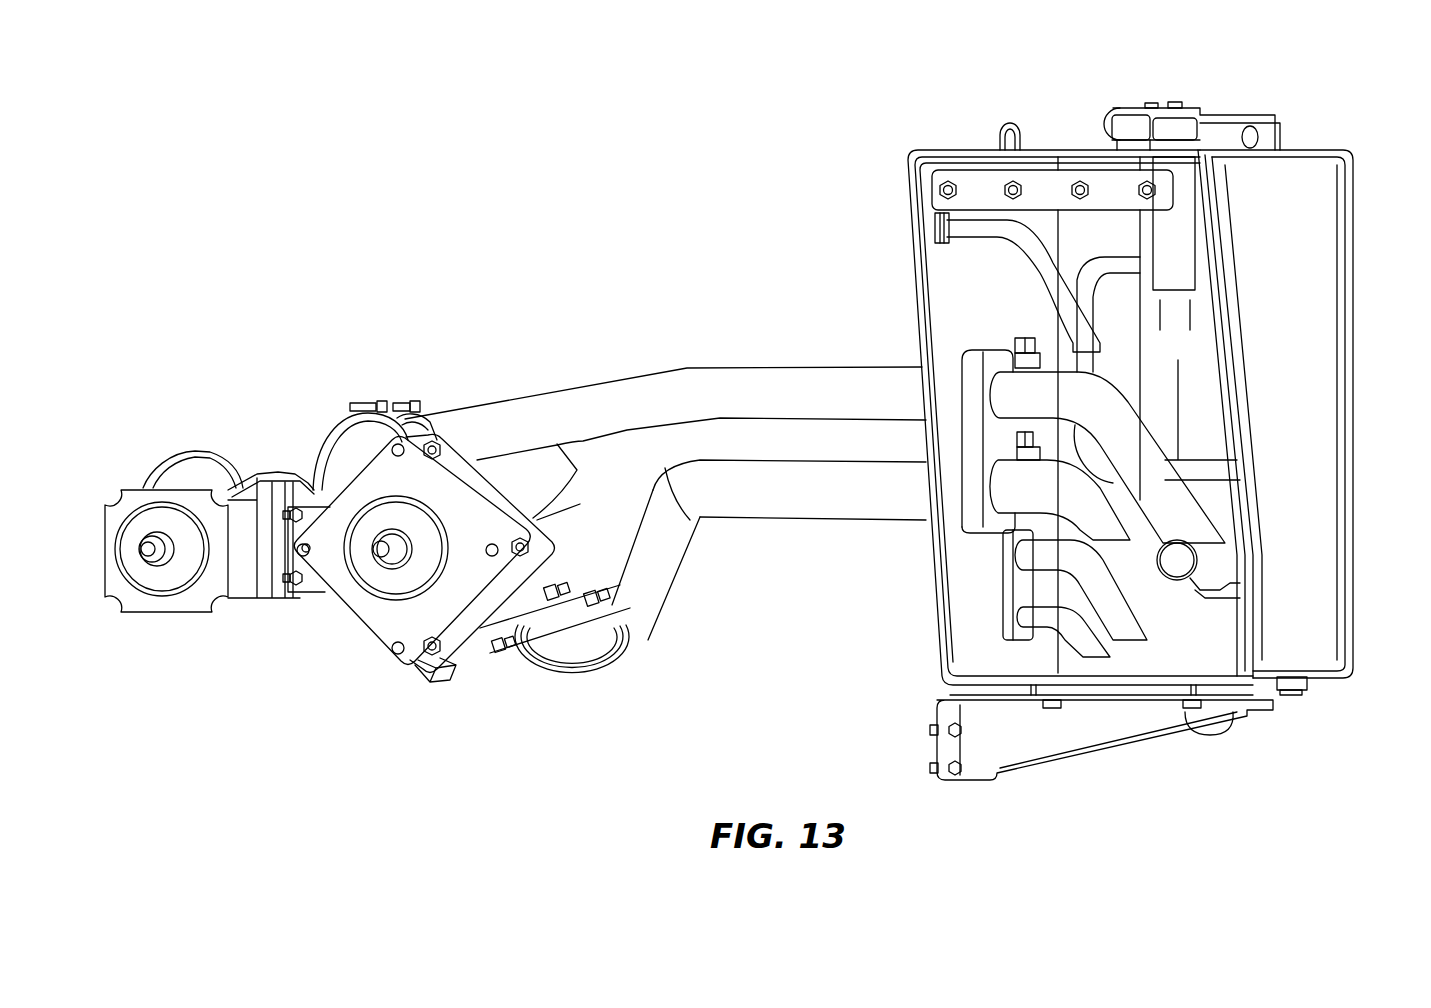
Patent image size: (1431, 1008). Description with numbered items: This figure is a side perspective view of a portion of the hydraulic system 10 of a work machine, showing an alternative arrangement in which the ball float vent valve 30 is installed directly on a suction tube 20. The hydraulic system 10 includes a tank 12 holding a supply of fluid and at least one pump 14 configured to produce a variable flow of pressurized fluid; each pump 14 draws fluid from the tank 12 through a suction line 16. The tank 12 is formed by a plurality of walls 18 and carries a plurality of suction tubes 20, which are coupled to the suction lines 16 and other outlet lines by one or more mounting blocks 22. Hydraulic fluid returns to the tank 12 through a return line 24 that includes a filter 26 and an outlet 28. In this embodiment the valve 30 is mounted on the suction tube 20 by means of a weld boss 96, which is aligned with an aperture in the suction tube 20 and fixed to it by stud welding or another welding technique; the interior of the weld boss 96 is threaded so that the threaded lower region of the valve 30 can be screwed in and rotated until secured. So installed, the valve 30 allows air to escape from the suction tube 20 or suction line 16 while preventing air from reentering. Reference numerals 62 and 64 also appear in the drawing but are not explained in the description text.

The hydraulic system 10 is at (590, 225).
The tank 12 is at (1335, 189).
The pump 14 is at (167, 612).
The suction line 16 is at (690, 385).
The walls 18 is at (940, 258).
The suction tubes 20 is at (1000, 377).
The mounting blocks 22 is at (985, 513).
The return line 24 is at (1247, 99).
The filter 26 is at (1190, 313).
The outlet 28 is at (1187, 558).
The ball float vent valve 30 is at (1020, 333).
The tube 62 is at (987, 243).
The foot 64 is at (1337, 673).
The weld boss 96 is at (1020, 360).